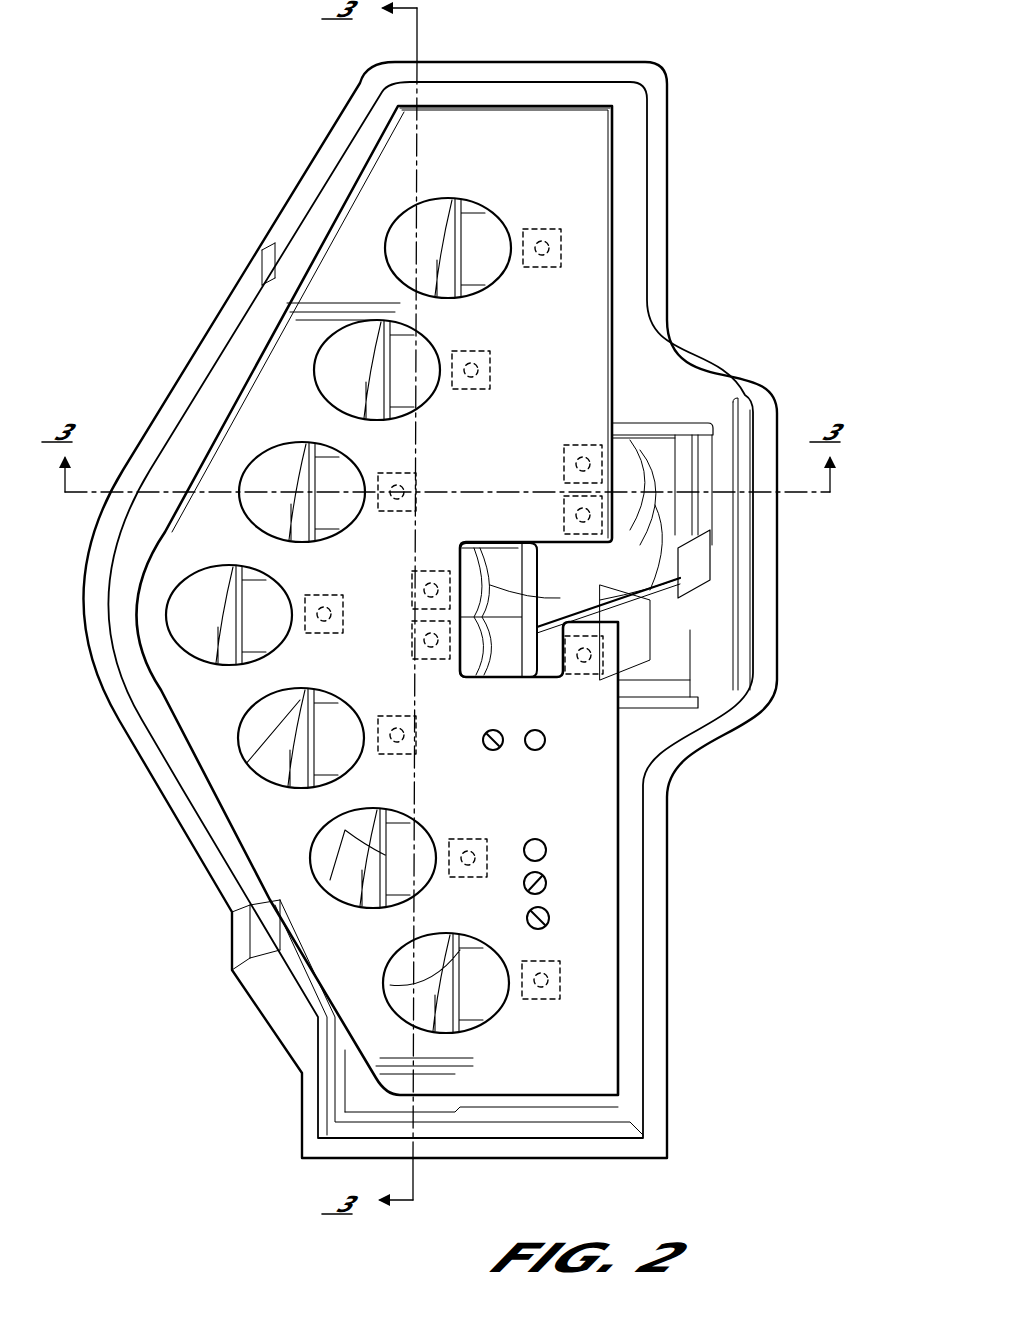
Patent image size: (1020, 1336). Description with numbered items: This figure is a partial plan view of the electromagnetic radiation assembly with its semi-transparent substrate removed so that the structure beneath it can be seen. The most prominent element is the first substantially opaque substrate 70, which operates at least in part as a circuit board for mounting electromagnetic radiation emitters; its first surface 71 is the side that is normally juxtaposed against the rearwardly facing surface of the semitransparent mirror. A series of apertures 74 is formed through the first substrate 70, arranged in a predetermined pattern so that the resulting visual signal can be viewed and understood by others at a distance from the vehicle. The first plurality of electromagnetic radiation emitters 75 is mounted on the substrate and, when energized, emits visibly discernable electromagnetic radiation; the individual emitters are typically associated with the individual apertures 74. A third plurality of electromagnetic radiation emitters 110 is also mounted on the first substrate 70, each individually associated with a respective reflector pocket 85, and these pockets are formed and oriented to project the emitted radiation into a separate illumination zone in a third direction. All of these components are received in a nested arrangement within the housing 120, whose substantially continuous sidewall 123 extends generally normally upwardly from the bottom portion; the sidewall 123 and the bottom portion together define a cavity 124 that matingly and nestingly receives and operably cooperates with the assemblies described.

The first substantially opaque substrate 70 is at (568, 352).
The first surface 71 is at (553, 132).
The apertures 74 is at (258, 470).
The first plurality of electromagnetic radiation emitters 75 is at (562, 240).
The reflector pockets 85 is at (673, 533).
The third plurality of electromagnetic radiation emitters 110 is at (564, 516).
The housing 120 is at (314, 1162).
The sidewall 123 is at (650, 985).
The cavity 124 is at (343, 1093).